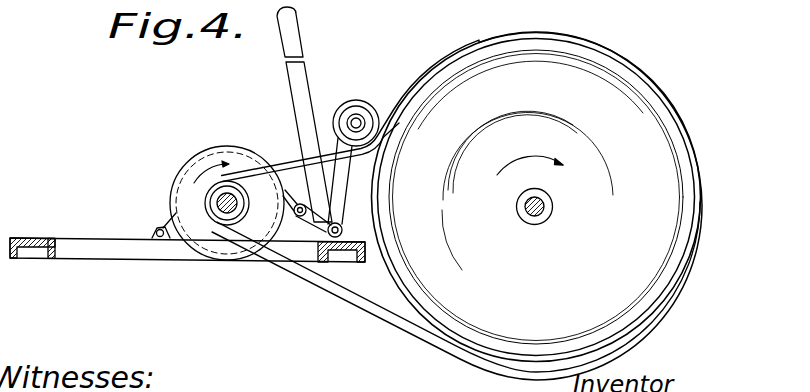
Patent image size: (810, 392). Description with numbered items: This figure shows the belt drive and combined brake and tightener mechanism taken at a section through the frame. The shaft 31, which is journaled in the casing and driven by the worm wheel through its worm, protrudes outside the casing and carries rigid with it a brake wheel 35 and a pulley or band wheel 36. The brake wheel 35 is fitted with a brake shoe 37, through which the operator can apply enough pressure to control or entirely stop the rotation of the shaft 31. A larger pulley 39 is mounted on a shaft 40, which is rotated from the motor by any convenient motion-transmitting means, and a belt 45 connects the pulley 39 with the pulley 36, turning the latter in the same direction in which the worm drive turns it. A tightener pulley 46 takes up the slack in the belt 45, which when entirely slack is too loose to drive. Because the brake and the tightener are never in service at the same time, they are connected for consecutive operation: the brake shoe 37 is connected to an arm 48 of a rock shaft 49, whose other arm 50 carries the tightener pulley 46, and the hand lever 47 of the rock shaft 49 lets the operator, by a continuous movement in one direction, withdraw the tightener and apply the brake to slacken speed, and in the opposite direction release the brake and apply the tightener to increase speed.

The shaft 31 is at (223, 212).
The brake wheel 35 is at (177, 180).
The pulley or band wheel 36 is at (210, 203).
The brake shoe 37 is at (285, 190).
The pulley 39 is at (623, 72).
The shaft 40 is at (543, 208).
The belt 45 is at (365, 307).
The tightener pulley 46 is at (343, 107).
The hand lever 47 is at (292, 75).
The arm 48 is at (306, 206).
The rock shaft 49 is at (343, 226).
The arm 50 is at (347, 165).